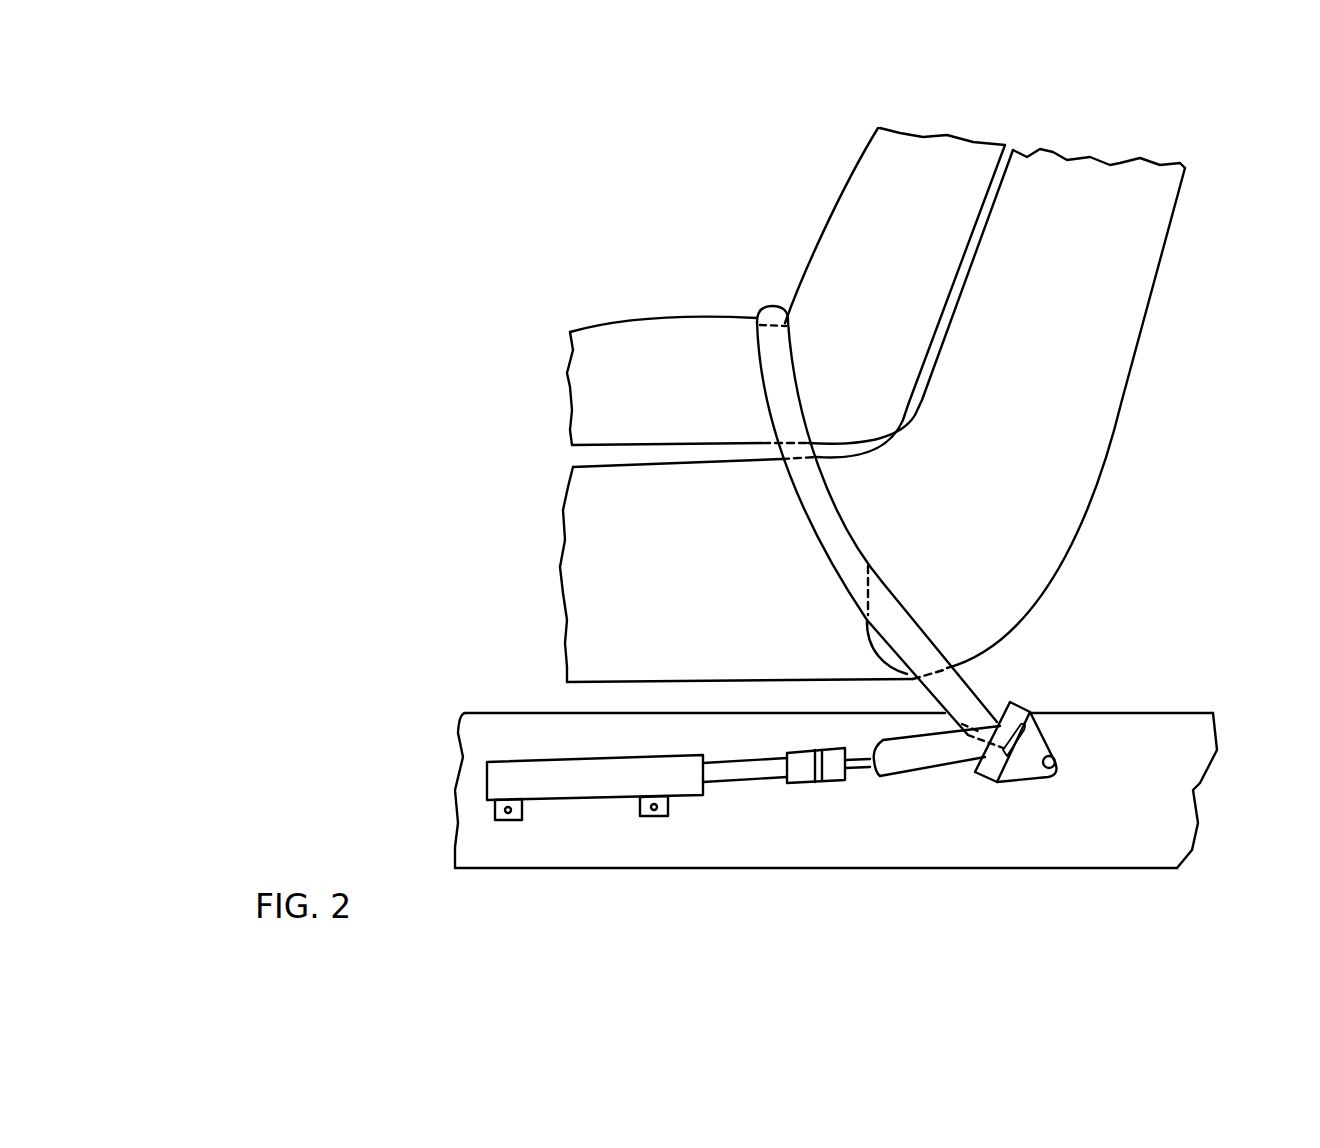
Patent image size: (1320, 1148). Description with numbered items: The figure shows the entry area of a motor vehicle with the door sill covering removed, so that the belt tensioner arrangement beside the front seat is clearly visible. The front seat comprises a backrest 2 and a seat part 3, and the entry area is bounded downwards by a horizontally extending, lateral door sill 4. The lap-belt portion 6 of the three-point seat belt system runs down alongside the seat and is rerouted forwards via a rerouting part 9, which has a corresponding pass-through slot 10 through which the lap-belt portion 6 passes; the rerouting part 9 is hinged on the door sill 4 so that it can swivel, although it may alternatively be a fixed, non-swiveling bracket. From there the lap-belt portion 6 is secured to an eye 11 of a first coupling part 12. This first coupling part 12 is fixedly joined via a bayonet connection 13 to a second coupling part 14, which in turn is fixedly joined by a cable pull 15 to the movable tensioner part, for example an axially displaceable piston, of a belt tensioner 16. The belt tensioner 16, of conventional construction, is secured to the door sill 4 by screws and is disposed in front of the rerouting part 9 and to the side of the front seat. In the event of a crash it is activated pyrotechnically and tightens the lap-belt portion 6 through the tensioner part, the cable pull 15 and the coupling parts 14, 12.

The backrest 2 is at (1077, 259).
The seat part 3 is at (658, 582).
The door sill 4 is at (1195, 787).
The lap-belt portion 6 is at (816, 536).
The rerouting part 9 is at (1040, 735).
The pass-through slot 10 is at (1018, 708).
The eye 11 is at (878, 773).
The first coupling part 12 is at (837, 777).
The bayonet connection 13 is at (807, 787).
The second coupling part 14 is at (798, 757).
The cable pull 15 is at (730, 778).
The belt tensioner 16 is at (557, 789).